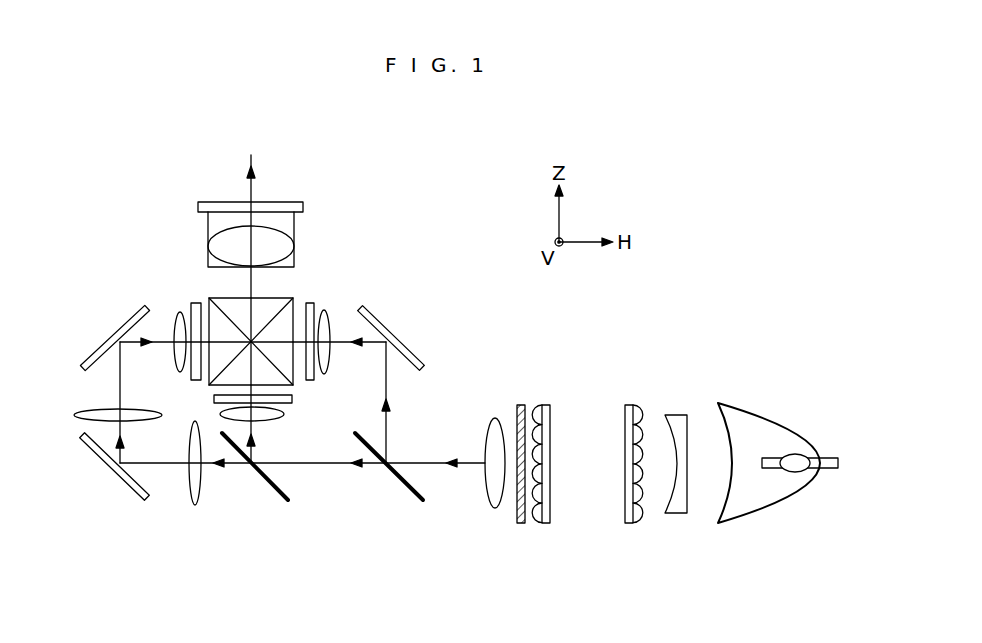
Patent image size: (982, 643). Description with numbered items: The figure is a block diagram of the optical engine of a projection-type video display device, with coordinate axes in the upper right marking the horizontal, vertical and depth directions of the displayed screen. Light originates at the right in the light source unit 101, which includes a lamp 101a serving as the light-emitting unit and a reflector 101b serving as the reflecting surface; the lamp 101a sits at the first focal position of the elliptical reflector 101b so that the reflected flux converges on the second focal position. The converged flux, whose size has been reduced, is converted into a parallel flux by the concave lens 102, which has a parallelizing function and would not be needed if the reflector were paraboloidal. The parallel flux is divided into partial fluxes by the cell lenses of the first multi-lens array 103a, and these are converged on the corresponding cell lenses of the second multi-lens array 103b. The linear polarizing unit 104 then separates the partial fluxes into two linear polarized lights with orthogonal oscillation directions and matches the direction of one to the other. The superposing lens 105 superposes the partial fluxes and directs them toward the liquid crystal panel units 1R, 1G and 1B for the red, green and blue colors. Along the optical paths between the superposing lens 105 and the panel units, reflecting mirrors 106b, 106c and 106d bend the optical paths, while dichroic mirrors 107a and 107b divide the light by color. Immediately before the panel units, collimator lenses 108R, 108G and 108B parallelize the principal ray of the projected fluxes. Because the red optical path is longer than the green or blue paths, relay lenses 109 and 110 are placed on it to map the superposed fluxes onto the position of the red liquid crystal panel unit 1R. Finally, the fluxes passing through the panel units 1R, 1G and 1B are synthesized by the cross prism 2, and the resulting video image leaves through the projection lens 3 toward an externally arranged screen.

The red liquid crystal panel unit 1R is at (196, 303).
The green liquid crystal panel unit 1G is at (292, 399).
The blue liquid crystal panel unit 1B is at (310, 303).
The cross prism 2 is at (287, 318).
The projection lens 3 is at (233, 228).
The light source unit 101 is at (777, 506).
The lamp 101a is at (795, 472).
The reflector 101b is at (745, 510).
The concave lens 102 is at (678, 513).
The first multi-lens array 103a is at (630, 523).
The second multi-lens array 103b is at (548, 523).
The linear polarizing unit 104 is at (521, 523).
The superposing lens 105 is at (495, 508).
The reflecting mirror 106b is at (385, 322).
The reflecting mirror 106c is at (122, 480).
The reflecting mirror 106d is at (128, 316).
The dichroic mirror 107a is at (400, 470).
The dichroic mirror 107b is at (270, 475).
The collimator lens 108R is at (177, 310).
The collimator lens 108G is at (284, 416).
The collimator lens 108B is at (324, 314).
The relay lens 109 is at (198, 488).
The relay lens 110 is at (80, 413).